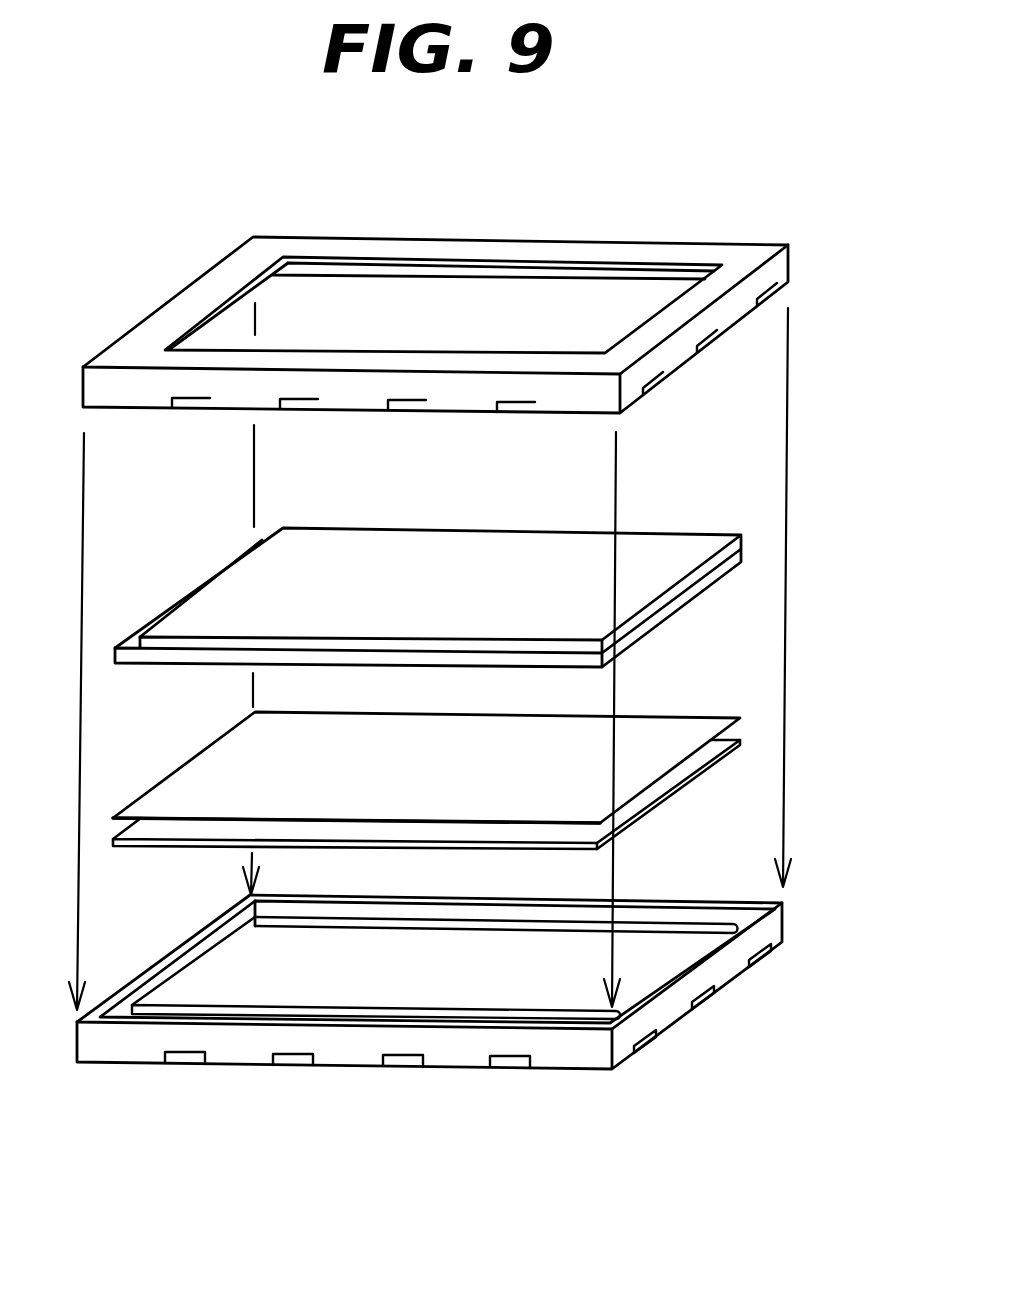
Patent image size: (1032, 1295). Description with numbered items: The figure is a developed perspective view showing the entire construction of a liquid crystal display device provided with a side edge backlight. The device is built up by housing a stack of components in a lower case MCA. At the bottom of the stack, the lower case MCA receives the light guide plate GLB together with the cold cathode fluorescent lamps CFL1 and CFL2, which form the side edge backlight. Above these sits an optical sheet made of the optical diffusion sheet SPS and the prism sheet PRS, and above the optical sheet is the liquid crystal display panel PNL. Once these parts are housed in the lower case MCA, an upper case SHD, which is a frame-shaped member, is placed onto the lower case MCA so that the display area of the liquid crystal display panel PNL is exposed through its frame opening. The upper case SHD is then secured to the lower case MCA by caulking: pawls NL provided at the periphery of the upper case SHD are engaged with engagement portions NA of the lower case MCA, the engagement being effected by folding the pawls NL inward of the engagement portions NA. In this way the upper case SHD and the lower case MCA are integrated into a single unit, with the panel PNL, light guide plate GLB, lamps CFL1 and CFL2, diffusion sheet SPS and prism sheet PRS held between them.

The upper case SHD is at (565, 248).
The pawls NL is at (710, 345).
The liquid crystal display panel PNL is at (428, 597).
The prism sheet PRS is at (693, 726).
The optical diffusion sheet SPS is at (690, 785).
The cold cathode fluorescent lamp CFL1 is at (437, 928).
The cold cathode fluorescent lamp CFL2 is at (452, 1008).
The light guide plate GLB is at (363, 993).
The lower case MCA is at (558, 1056).
The engagement portions NA is at (703, 1000).